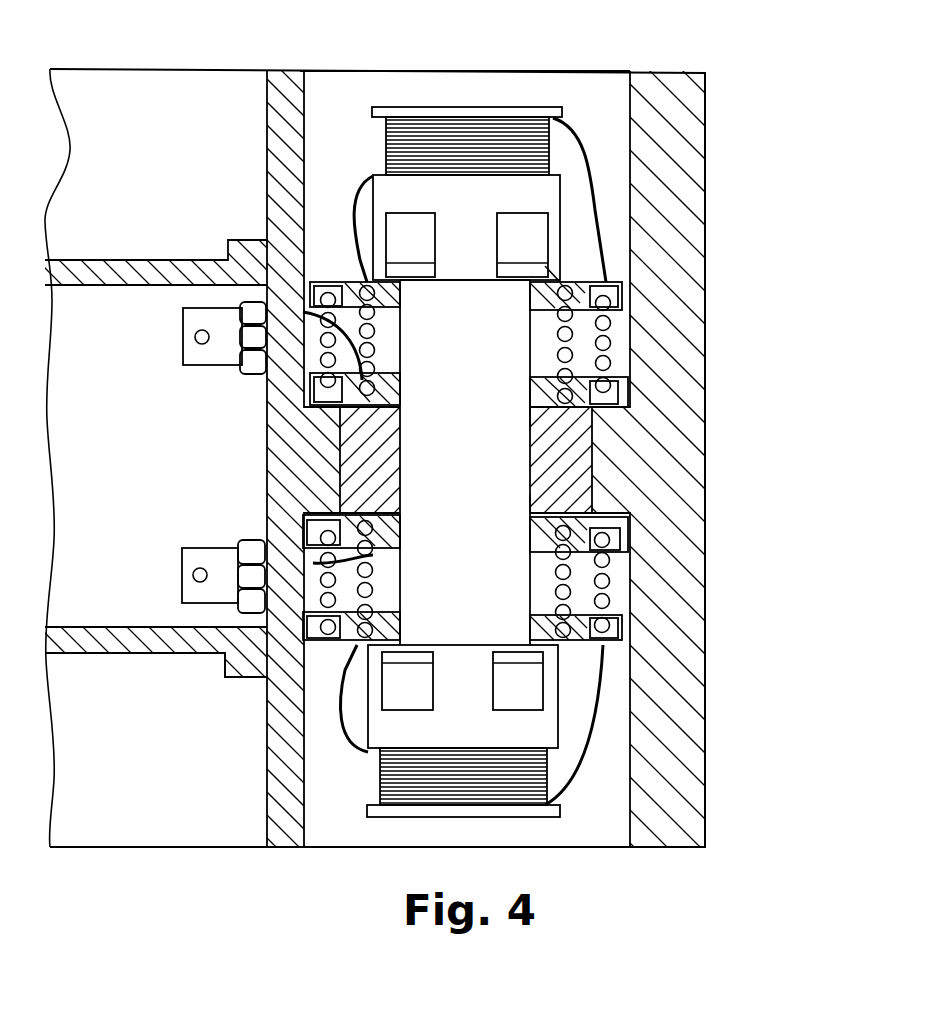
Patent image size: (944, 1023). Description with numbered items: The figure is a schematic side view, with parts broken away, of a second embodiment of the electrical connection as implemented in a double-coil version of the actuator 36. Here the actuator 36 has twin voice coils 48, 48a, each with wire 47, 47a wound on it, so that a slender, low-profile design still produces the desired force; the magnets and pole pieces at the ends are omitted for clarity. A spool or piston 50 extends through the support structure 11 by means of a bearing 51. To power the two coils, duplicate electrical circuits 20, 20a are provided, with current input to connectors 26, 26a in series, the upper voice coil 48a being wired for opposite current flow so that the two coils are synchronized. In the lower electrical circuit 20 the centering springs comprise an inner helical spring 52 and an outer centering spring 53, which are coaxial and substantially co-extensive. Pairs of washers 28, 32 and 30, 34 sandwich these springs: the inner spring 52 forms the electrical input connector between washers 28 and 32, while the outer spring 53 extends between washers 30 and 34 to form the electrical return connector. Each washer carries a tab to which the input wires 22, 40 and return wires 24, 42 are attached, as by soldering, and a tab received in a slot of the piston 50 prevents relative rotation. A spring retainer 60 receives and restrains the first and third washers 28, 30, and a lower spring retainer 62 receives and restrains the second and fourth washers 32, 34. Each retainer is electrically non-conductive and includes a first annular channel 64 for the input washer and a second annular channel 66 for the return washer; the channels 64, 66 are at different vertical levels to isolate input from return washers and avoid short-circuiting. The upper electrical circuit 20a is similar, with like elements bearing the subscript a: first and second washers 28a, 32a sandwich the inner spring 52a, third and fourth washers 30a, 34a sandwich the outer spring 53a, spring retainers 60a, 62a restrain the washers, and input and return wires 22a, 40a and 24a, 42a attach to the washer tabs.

The support structure 11 is at (705, 135).
The actuator 36 is at (545, 70).
The upper electrical circuit 20a is at (284, 277).
The lower electrical circuit 20 is at (310, 672).
The fourth washer 34 is at (225, 667).
The fourth washer of upper circuit 34a is at (555, 266).
The upper connector 26a is at (183, 322).
The connector 26 is at (180, 568).
The spool or piston 50 is at (478, 406).
The bearing 51 is at (528, 472).
The first washer of upper circuit 28a is at (545, 420).
The first washer 28 is at (528, 506).
The upper voice coil 48a is at (484, 100).
The wire of upper voice coil 47a is at (386, 150).
The second washer of upper circuit 32a is at (350, 282).
The input wire of upper circuit 40a is at (583, 152).
The return wire of upper circuit 42a is at (360, 198).
The return wire of upper circuit 24a is at (382, 323).
The input wire of upper circuit 22a is at (320, 335).
The third washer of upper circuit 30a is at (322, 403).
The lower spring retainer of upper circuit 62a is at (612, 303).
The outer centering spring of upper circuit 53a is at (612, 322).
The inner helical spring of upper circuit 52a is at (610, 352).
The spring retainer of upper circuit 60a is at (622, 400).
The spring retainer 60 is at (318, 535).
The third washer 30 is at (310, 548).
The return wire 24 is at (320, 560).
The input wire 22 is at (373, 556).
The lower spring retainer 62 is at (385, 630).
The first annular channel 64 is at (568, 528).
The second annular channel 66 is at (606, 540).
The outer centering spring 53 is at (606, 560).
The inner helical spring 52 is at (570, 592).
The second washer 32 is at (548, 660).
The input wire 40 is at (336, 720).
The wire 47 is at (377, 773).
The voice coil 48 is at (473, 820).
The return wire 42 is at (580, 777).